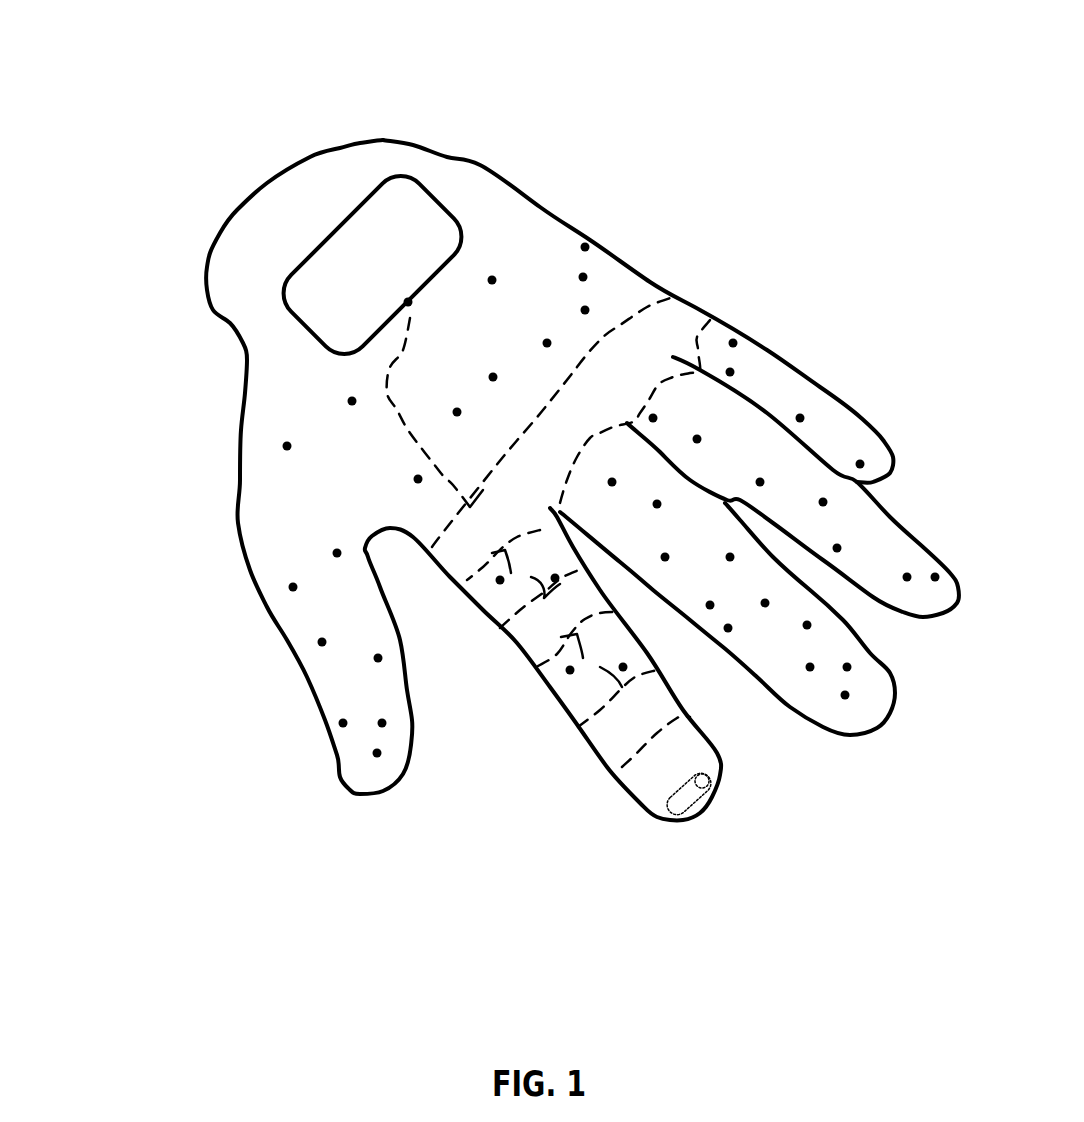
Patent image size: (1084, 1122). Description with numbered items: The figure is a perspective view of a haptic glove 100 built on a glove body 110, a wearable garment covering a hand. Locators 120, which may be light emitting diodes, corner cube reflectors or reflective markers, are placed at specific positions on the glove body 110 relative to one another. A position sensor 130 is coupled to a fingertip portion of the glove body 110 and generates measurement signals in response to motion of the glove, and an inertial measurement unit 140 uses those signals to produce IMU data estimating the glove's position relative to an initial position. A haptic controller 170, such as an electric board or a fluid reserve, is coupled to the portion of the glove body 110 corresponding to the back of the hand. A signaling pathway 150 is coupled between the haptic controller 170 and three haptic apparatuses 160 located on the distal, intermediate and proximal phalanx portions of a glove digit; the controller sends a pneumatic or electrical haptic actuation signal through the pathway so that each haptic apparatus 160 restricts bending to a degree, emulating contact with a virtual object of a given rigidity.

The haptic glove 100 is at (106, 28).
The glove body 110 is at (240, 367).
The locators 120 is at (740, 335).
The position sensor 130 is at (709, 782).
The inertial measurement unit 140 is at (688, 815).
The signaling pathway 150 is at (400, 427).
The haptic apparatus 160 is at (611, 750).
The haptic controller 170 is at (370, 265).